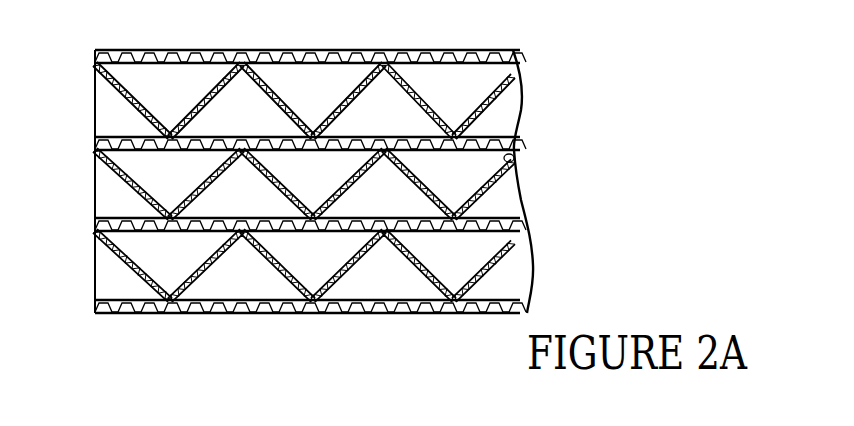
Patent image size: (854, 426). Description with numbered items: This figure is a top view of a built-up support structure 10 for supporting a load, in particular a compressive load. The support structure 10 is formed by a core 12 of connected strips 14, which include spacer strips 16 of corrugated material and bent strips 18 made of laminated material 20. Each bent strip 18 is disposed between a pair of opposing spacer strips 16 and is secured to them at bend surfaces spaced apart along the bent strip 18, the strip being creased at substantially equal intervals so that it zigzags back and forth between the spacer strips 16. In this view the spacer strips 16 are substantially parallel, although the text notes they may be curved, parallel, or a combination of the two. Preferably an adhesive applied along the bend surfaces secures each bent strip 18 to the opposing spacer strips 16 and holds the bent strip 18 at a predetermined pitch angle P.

The support structure 10 is at (316, 17).
The core 12 is at (55, 193).
The connected strips 14 is at (95, 54).
The spacer strips 16 is at (523, 137).
The bent strip 18 is at (530, 240).
The laminated material 20 is at (506, 168).
The pitch angle P is at (413, 91).